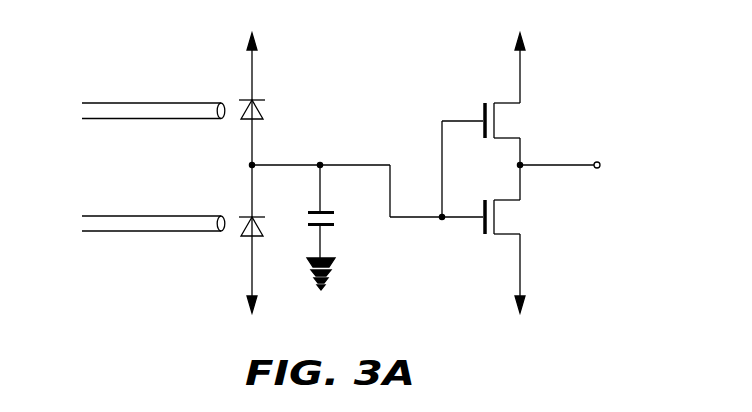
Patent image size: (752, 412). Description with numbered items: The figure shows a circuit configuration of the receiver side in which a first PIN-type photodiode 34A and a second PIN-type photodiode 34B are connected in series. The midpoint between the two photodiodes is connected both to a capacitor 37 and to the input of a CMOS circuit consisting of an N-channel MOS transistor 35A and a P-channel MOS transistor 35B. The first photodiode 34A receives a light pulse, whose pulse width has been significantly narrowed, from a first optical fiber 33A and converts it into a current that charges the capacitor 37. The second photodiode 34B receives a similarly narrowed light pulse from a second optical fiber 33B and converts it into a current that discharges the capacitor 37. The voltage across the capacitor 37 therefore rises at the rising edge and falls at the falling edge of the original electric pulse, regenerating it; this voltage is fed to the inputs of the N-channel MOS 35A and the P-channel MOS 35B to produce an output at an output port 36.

The first optical fiber 33A is at (137, 110).
The second optical fiber 33B is at (133, 223).
The first PIN-type photodiode 34A is at (258, 114).
The second PIN-type photodiode 34B is at (248, 217).
The N-channel MOS transistor 35A is at (480, 107).
The P-channel MOS transistor 35B is at (482, 237).
The output port 36 is at (600, 162).
The capacitor 37 is at (330, 225).